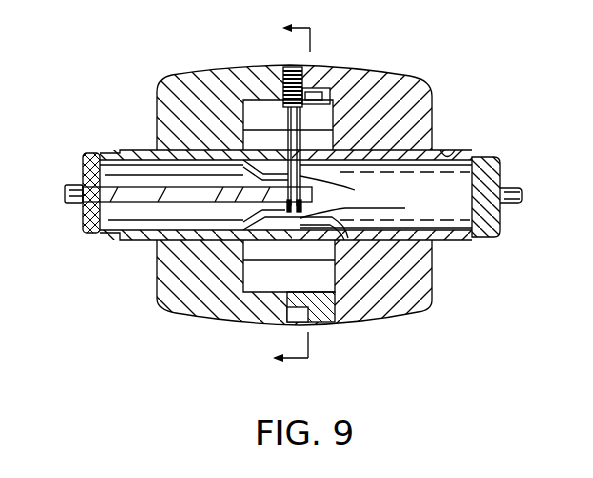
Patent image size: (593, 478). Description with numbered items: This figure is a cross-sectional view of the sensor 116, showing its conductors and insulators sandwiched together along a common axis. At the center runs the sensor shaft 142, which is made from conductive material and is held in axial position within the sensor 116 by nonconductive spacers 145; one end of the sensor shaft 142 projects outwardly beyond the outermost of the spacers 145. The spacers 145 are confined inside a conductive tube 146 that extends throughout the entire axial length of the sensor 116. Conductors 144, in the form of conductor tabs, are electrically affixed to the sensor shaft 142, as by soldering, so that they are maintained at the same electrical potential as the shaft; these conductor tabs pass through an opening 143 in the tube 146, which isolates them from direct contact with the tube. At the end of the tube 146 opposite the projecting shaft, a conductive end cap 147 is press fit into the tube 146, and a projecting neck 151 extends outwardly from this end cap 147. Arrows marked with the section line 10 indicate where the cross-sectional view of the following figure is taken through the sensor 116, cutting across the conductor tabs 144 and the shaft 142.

The sensor 116 is at (388, 56).
The sensor shaft 142 is at (399, 207).
The opening 143 is at (335, 150).
The conductors 144 is at (355, 190).
The nonconductive spacers 145 is at (213, 150).
The conductive tube 146 is at (145, 147).
The conductive end cap 147 is at (505, 180).
The projecting neck 151 is at (517, 205).
The section line 10- 10 is at (307, 196).